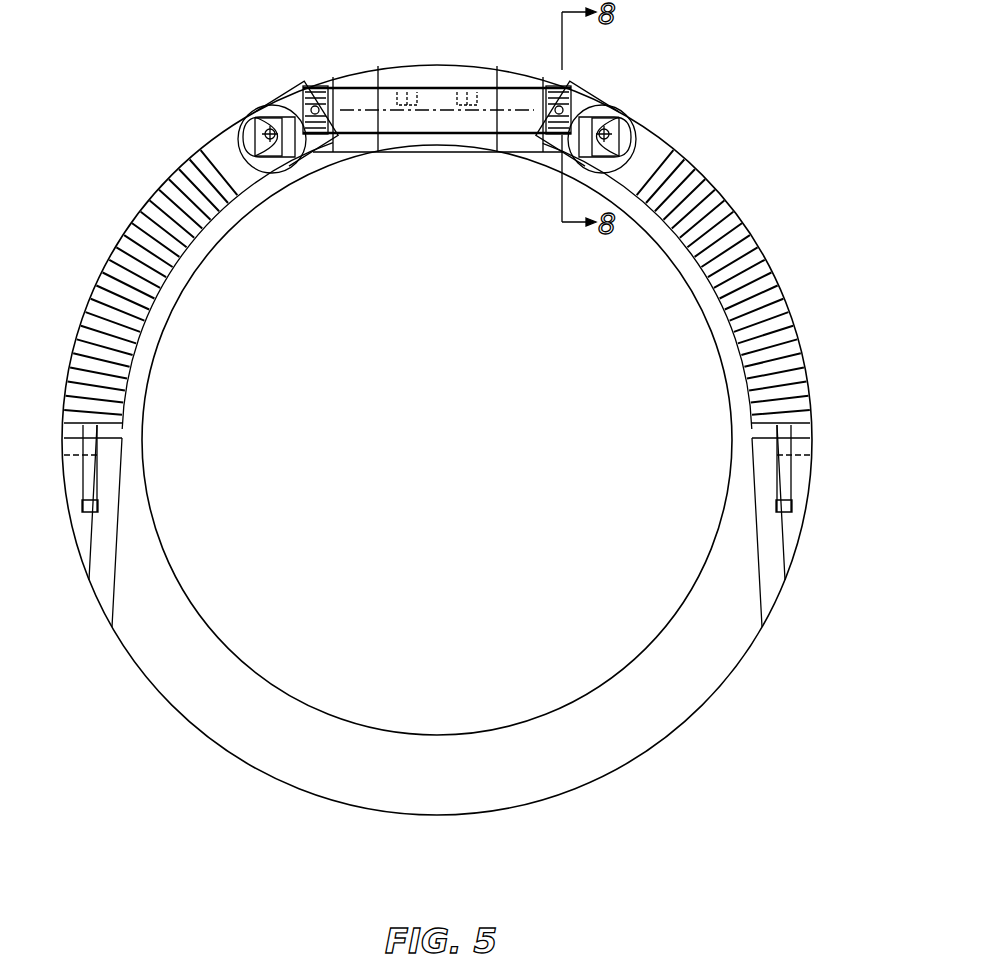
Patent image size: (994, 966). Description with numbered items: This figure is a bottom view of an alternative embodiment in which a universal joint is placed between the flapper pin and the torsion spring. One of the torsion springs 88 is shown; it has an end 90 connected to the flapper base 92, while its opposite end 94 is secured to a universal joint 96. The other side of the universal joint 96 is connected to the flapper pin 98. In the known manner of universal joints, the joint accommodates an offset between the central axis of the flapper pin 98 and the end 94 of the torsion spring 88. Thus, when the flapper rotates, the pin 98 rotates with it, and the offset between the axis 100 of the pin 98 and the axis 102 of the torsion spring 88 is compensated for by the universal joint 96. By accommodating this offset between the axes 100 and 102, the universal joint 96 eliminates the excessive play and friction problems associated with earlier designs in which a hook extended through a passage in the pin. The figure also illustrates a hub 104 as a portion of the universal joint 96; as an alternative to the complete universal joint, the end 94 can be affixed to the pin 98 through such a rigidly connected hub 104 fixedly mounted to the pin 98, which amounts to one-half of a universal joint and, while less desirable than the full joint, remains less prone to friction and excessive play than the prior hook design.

The torsion spring 88 is at (763, 238).
The end 90 is at (793, 485).
The flapper base 92 is at (747, 527).
The opposite end 94 is at (638, 124).
The universal joint 96 is at (565, 87).
The flapper pin 98 is at (516, 93).
The axis 100 is at (487, 108).
The axis 102 is at (636, 127).
The hub 104 is at (589, 110).